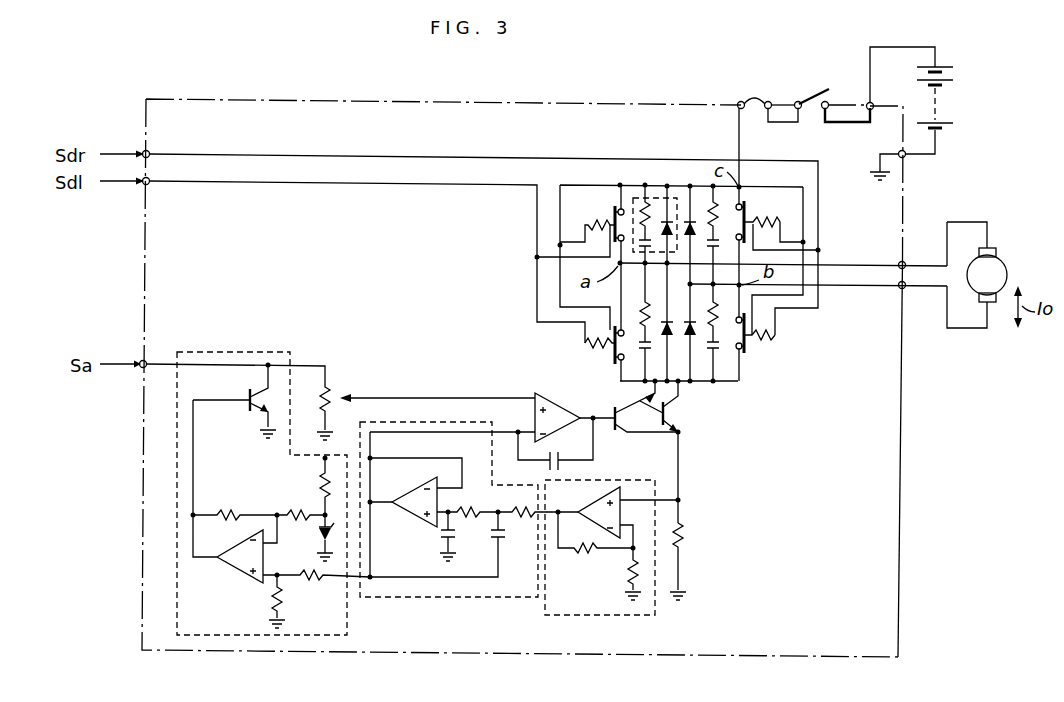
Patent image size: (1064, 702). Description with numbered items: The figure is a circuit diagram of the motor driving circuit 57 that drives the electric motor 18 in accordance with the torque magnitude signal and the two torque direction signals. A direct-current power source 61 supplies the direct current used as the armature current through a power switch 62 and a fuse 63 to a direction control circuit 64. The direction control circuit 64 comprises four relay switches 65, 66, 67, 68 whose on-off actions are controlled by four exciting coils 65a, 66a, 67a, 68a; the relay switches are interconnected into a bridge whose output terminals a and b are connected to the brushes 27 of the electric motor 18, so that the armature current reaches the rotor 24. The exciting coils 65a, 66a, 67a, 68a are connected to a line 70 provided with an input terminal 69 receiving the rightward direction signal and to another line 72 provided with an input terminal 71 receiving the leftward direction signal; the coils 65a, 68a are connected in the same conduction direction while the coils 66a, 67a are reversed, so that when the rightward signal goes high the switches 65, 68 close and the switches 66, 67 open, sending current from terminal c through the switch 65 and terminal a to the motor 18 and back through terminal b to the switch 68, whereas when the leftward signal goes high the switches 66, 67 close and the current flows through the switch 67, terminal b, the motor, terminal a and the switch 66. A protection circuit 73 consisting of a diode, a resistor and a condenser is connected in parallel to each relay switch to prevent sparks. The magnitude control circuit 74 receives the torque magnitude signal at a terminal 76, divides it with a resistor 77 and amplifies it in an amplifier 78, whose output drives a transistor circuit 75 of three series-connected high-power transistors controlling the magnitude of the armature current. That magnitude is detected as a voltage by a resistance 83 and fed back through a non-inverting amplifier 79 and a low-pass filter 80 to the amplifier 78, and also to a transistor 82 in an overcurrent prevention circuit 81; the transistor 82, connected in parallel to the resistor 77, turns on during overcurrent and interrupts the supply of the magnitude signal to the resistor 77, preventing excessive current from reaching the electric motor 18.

The electric motor 18 is at (969, 214).
The rotor 24 is at (1003, 268).
The brush 27 is at (990, 246).
The motor driving circuit 57 is at (520, 100).
The direct-current power source 61 is at (940, 108).
The power switch 62 is at (812, 97).
The fuse 63 is at (750, 101).
The direction control circuit 64 is at (676, 176).
The relay switch 65 is at (614, 208).
The exciting coil 65a is at (587, 222).
The relay switch 66 is at (613, 362).
The exciting coil 66a is at (586, 343).
The relay switch 67 is at (746, 204).
The exciting coil 67a is at (782, 221).
The relay switch 68 is at (746, 350).
The exciting coil 68a is at (778, 333).
The input terminal 69 is at (149, 151).
The line 70 is at (470, 156).
The input terminal 71 is at (149, 184).
The line 72 is at (447, 187).
The protection circuit 73 is at (640, 197).
The magnitude control circuit 74 is at (420, 372).
The transistor circuit 75 is at (688, 418).
The terminal 76 is at (147, 361).
The resistor 77 is at (331, 392).
The amplifier 78 is at (572, 403).
The non-inverting amplifier 79 is at (592, 616).
The low-pass filter 80 is at (455, 598).
The overcurrent prevention circuit 81 is at (177, 473).
The transistor 82 is at (248, 405).
The resistance 83 is at (688, 538).